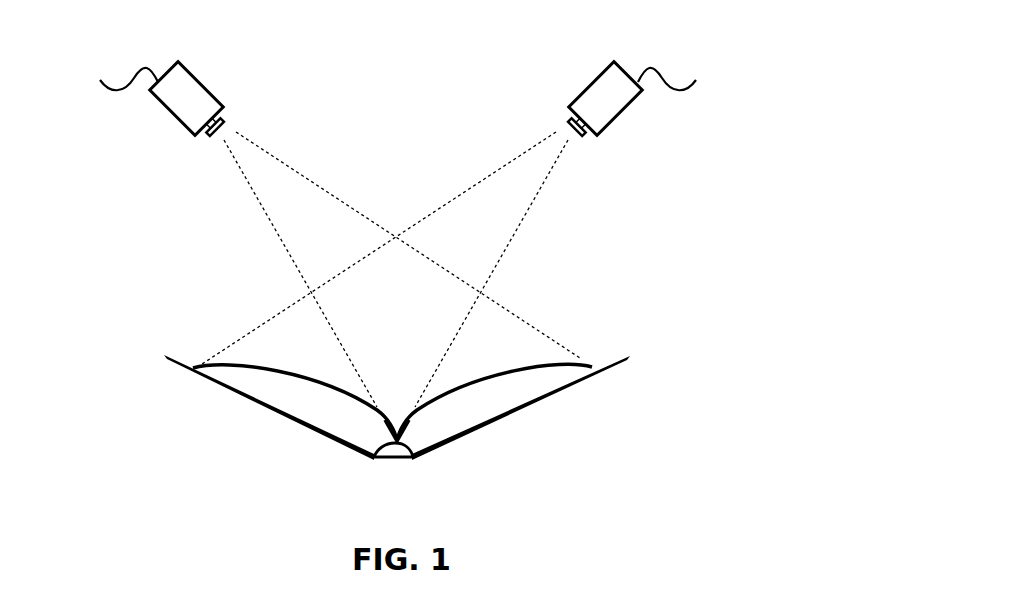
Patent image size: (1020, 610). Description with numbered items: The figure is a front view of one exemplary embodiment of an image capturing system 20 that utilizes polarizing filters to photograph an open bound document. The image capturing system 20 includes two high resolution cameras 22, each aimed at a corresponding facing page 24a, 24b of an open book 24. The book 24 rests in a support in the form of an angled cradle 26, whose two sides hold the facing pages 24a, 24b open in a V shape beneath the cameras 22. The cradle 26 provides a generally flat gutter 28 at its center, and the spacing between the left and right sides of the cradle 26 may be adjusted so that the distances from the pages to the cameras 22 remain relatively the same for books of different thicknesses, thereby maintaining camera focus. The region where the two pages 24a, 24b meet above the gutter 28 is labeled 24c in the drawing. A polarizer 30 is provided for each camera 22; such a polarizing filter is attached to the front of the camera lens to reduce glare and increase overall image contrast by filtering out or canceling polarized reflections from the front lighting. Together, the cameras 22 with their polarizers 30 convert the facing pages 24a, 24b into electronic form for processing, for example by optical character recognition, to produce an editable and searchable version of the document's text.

The image capturing system 20 is at (823, 67).
The camera 22 is at (400, 99).
The book 24 is at (400, 400).
The facing page 24a is at (297, 370).
The facing page 24b is at (485, 377).
The page gutter 24c is at (392, 430).
The angled cradle 26 is at (170, 367).
The gutter 28 is at (400, 460).
The polarizer 30 is at (222, 147).